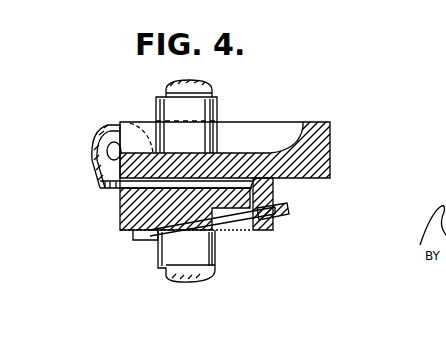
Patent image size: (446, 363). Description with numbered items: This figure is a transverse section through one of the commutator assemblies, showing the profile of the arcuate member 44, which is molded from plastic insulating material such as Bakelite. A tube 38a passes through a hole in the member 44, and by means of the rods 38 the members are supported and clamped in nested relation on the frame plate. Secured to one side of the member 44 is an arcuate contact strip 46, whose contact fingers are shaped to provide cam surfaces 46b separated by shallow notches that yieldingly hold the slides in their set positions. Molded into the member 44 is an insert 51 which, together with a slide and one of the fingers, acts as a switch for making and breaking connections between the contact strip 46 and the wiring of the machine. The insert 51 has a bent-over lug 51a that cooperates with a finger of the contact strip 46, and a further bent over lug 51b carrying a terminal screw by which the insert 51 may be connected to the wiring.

The rod 38 is at (205, 82).
The tube 38a is at (218, 110).
The arcuate member 44 is at (320, 178).
The contact strip 46 is at (135, 233).
The cam surface 46b is at (285, 213).
The insert 51 is at (105, 189).
The bent-over lug 51a is at (262, 203).
The bent over lug 51b is at (92, 142).